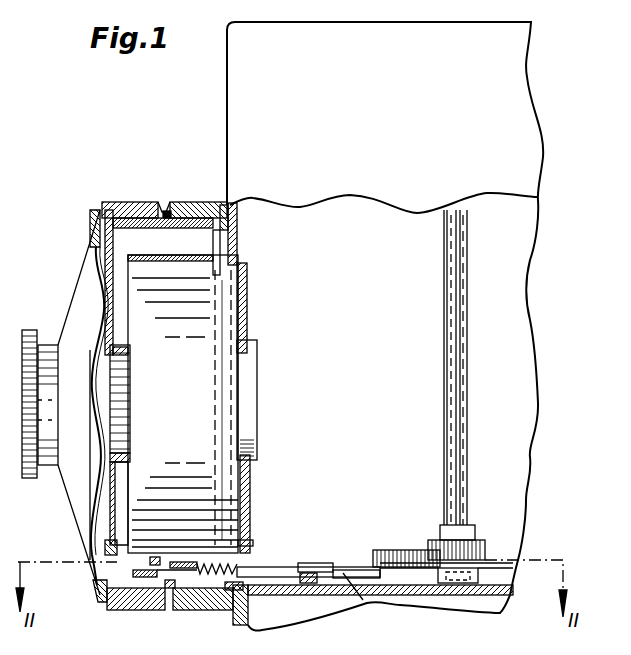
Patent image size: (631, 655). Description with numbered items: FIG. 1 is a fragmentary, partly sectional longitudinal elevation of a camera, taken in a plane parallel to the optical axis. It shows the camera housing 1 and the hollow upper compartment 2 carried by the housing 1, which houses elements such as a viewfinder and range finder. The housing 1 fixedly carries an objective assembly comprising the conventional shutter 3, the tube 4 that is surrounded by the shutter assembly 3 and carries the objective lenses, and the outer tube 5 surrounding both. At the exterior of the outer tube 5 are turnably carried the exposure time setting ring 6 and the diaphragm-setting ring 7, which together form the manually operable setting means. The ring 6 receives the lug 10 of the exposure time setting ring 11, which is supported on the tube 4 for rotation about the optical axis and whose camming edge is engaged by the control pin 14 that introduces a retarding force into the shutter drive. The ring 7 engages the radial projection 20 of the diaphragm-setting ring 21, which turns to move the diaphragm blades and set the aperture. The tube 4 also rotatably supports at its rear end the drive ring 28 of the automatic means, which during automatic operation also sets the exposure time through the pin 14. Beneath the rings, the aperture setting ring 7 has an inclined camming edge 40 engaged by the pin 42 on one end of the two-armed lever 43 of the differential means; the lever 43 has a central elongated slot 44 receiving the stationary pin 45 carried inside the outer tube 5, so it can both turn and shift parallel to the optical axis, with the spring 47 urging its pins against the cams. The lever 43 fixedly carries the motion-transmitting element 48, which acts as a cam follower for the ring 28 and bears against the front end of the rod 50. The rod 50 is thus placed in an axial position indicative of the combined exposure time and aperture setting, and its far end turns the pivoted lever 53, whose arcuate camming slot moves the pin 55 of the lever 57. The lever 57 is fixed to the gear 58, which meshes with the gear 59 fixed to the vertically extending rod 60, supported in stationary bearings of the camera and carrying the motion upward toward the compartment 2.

The camera housing 1 is at (400, 593).
The hollow upper compartment 2 is at (248, 66).
The shutter 3 is at (140, 298).
The tube 4 is at (243, 400).
The outer tube 5 is at (165, 211).
The exposure time setting ring 6 is at (130, 205).
The diaphragm-setting ring 7 is at (192, 203).
The lug 10 is at (110, 250).
The exposure time setting ring 11 is at (110, 495).
The control pin 14 is at (133, 542).
The radial projection 20 is at (217, 248).
The diaphragm-setting ring 21 is at (215, 318).
The drive ring 28 is at (246, 333).
The inclined camming edge 40 is at (172, 603).
The pin 42 is at (237, 603).
The two-armed lever 43 is at (133, 572).
The elongated slot 44 is at (100, 593).
The stationary pin 45 is at (147, 585).
The spring 47 is at (228, 590).
The motion-transmitting element 48 is at (172, 562).
The rod 50 is at (268, 560).
The lever 53 is at (332, 558).
The pin 55 is at (363, 600).
The lever 57 is at (363, 558).
The gear 58 is at (400, 548).
The gear 59 is at (482, 543).
The rod 60 is at (455, 397).